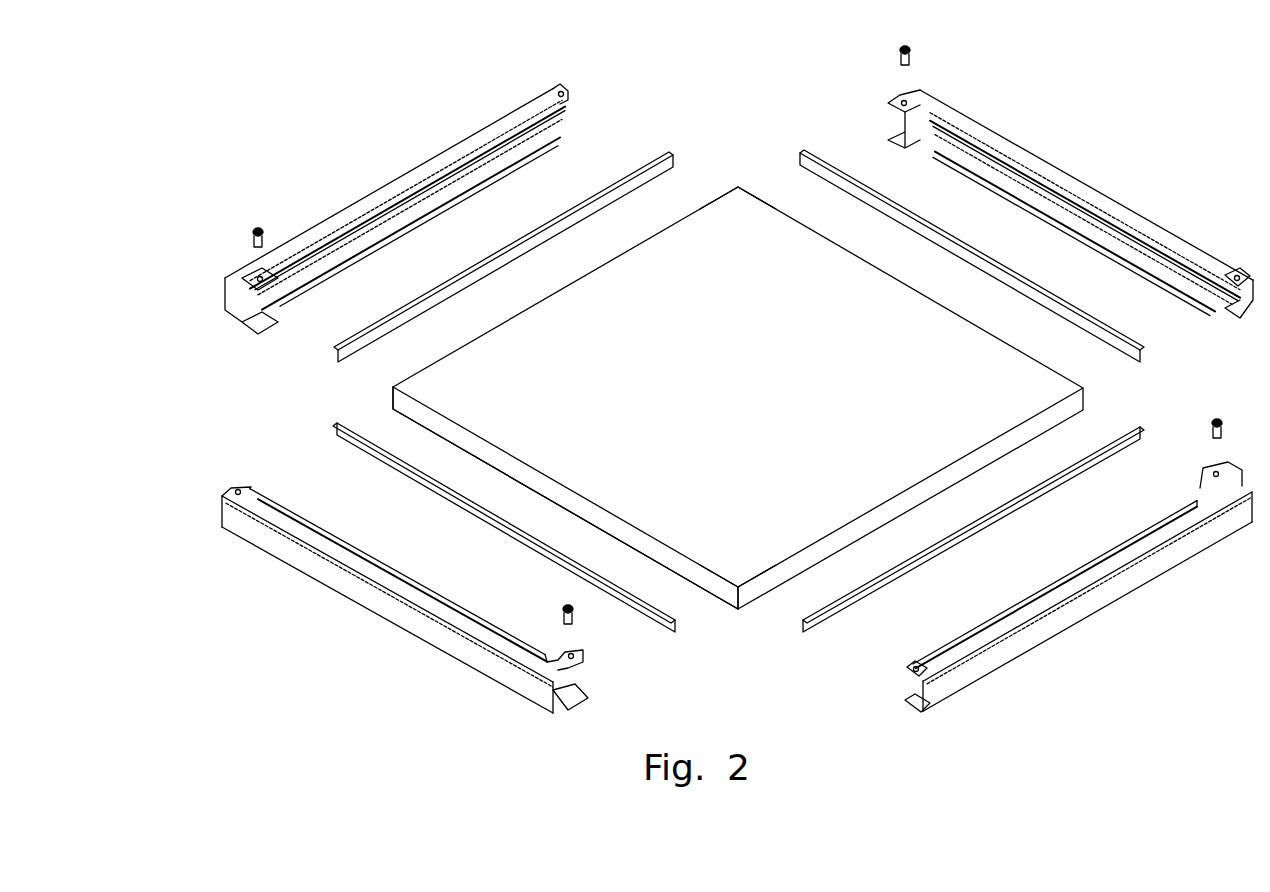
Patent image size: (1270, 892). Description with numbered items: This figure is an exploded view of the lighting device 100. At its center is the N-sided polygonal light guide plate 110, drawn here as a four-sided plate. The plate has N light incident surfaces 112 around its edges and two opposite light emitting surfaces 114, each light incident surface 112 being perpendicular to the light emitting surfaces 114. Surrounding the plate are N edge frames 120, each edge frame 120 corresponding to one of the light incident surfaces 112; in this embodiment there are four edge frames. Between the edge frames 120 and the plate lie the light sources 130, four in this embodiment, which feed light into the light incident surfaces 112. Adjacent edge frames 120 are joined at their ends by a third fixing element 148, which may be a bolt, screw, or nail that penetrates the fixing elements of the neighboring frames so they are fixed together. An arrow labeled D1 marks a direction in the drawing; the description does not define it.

The lighting device 100 is at (332, 127).
The N-sided polygonal light guide plate 110 is at (1045, 385).
The light incident surfaces 112 is at (767, 196).
The light emitting surfaces 114 is at (436, 381).
The edge frames 120 is at (350, 585).
The light source 130 is at (455, 494).
The third fixing element 148 is at (561, 610).
The direction D1 is at (220, 319).